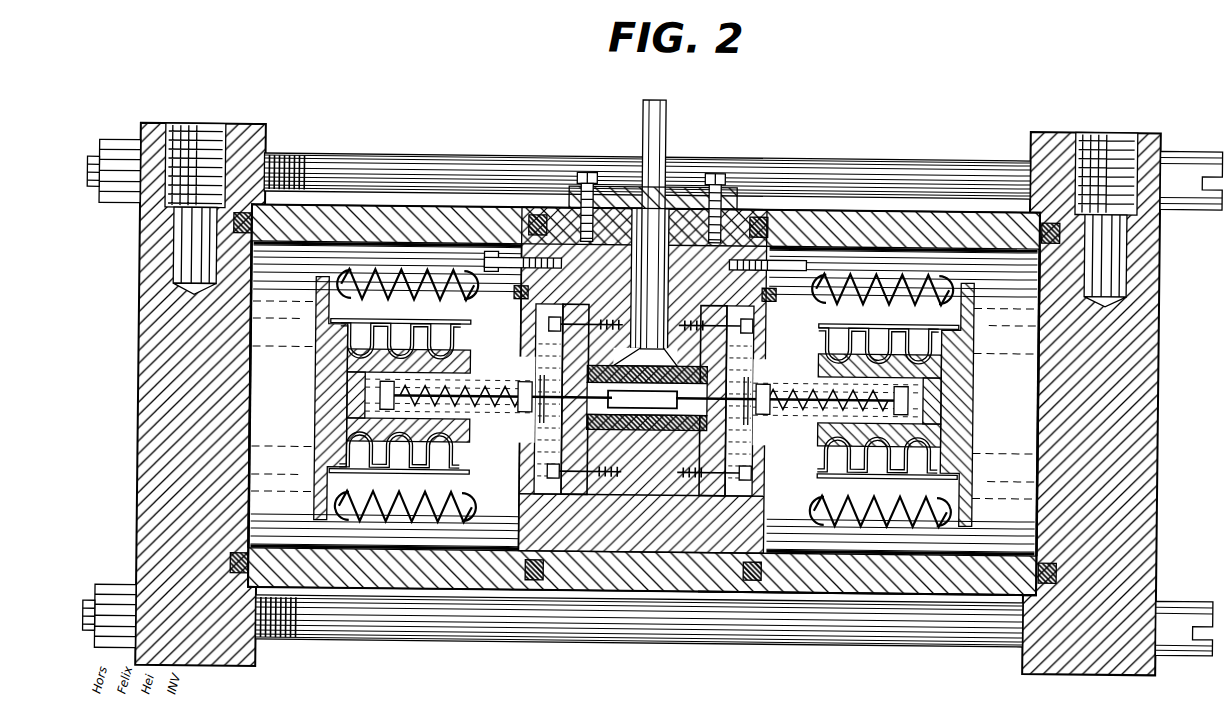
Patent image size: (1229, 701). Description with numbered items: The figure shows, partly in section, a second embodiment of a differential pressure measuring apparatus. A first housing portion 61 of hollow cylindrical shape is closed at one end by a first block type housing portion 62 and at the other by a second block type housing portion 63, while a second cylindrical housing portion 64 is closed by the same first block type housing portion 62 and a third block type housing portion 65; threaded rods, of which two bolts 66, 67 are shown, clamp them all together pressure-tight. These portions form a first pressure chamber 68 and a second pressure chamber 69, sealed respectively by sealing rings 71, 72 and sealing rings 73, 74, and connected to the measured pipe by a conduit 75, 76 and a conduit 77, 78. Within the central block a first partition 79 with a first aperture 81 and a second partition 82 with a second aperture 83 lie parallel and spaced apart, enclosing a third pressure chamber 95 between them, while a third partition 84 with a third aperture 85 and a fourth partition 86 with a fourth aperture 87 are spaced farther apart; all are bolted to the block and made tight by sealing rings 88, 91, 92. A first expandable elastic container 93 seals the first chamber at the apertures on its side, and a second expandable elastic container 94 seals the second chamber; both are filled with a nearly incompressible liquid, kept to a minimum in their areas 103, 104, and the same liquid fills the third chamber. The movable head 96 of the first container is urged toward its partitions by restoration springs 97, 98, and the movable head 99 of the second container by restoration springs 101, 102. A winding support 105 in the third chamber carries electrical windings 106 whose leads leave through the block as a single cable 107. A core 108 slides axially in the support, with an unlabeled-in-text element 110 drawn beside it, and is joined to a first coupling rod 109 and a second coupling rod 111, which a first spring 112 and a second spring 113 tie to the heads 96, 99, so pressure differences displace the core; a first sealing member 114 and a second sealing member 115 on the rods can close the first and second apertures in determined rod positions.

The first housing portion 61 is at (930, 588).
The first block type housing portion 62 is at (675, 584).
The second block type housing portion 63 is at (1160, 430).
The second cylindrical housing portion 64 is at (328, 578).
The third block type housing portion 65 is at (150, 408).
The bolt 66 is at (862, 170).
The bolt 67 is at (601, 625).
The first pressure chamber 68 is at (1038, 402).
The second pressure chamber 69 is at (262, 410).
The sealing ring 71 is at (1058, 568).
The sealing ring 72 is at (758, 216).
The sealing ring 73 is at (535, 580).
The sealing ring 74 is at (233, 566).
The conduit 75 is at (1112, 148).
The conduit 76 is at (1088, 268).
The conduit 77 is at (226, 128).
The conduit 78 is at (180, 262).
The first partition 79 is at (745, 568).
The first aperture 81 is at (755, 440).
The second partition 82 is at (578, 496).
The second aperture 83 is at (545, 442).
The third partition 84 is at (798, 260).
The third aperture 85 is at (812, 455).
The fourth partition 86 is at (522, 258).
The fourth aperture 87 is at (478, 458).
The sealing ring 88 is at (710, 494).
The sealing ring 91 is at (800, 314).
The sealing ring 92 is at (528, 294).
The first expandable elastic container 93 is at (900, 337).
The second expandable elastic container 94 is at (398, 323).
The third pressure chamber 95 is at (660, 492).
The movable head 96 is at (974, 438).
The restoration spring 97 is at (895, 283).
The restoration spring 98 is at (836, 525).
The movable head 99 is at (318, 444).
The restoration spring 101 is at (386, 278).
The restoration spring 102 is at (422, 527).
The area 103 is at (972, 352).
The area 104 is at (350, 354).
The winding support 105 is at (664, 348).
The electrical windings 106 is at (668, 440).
The cable 107 is at (664, 138).
The core 108 is at (612, 187).
The first coupling rod 109 is at (805, 300).
The stem guide 110 is at (632, 332).
The second coupling rod 111 is at (500, 300).
The first spring 112 is at (840, 400).
The second spring 113 is at (418, 395).
The first sealing member 114 is at (782, 392).
The second sealing member 115 is at (538, 386).